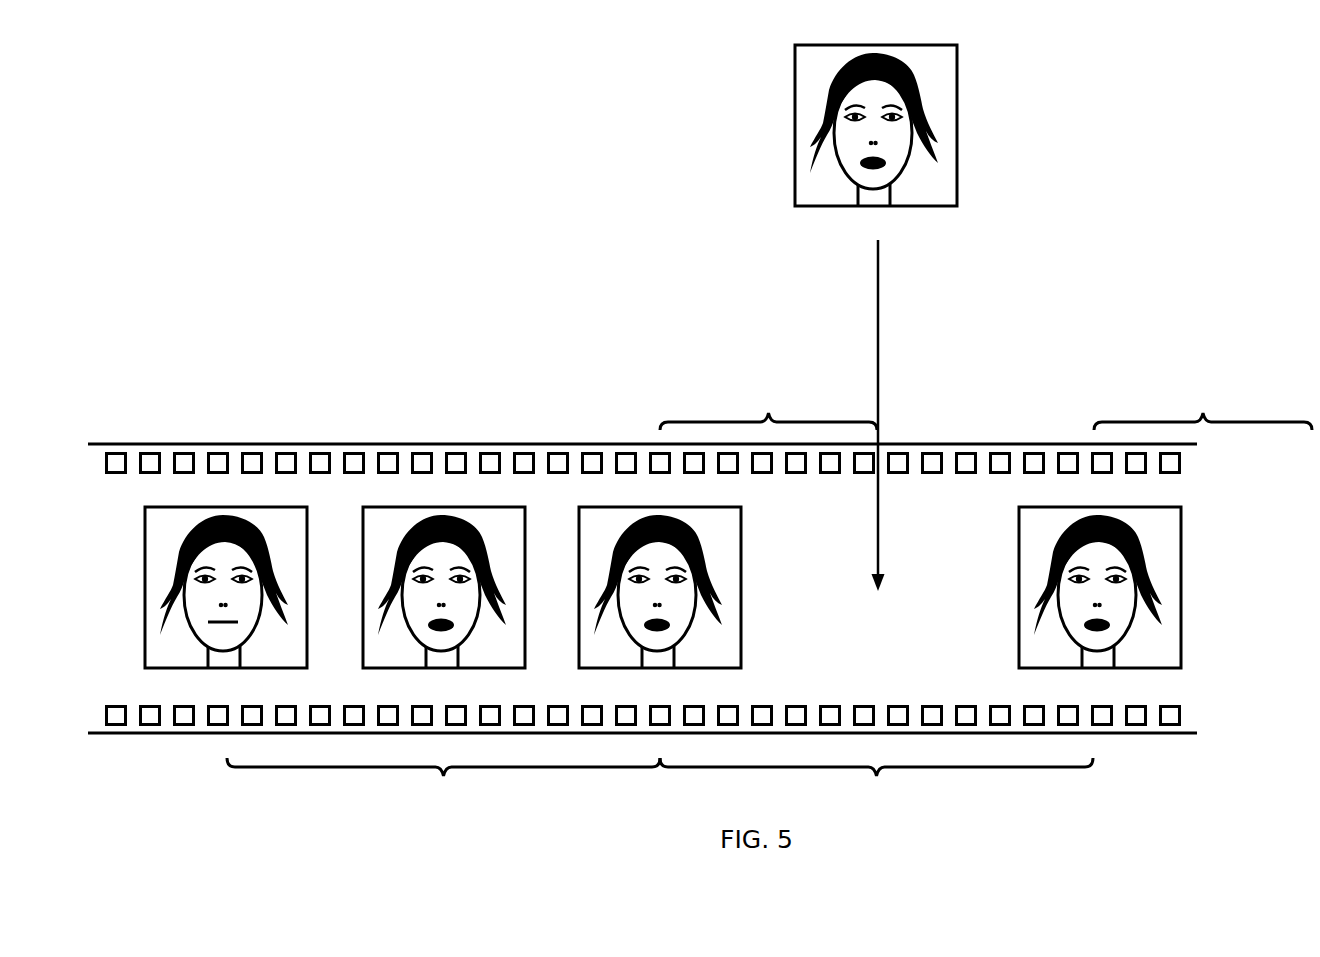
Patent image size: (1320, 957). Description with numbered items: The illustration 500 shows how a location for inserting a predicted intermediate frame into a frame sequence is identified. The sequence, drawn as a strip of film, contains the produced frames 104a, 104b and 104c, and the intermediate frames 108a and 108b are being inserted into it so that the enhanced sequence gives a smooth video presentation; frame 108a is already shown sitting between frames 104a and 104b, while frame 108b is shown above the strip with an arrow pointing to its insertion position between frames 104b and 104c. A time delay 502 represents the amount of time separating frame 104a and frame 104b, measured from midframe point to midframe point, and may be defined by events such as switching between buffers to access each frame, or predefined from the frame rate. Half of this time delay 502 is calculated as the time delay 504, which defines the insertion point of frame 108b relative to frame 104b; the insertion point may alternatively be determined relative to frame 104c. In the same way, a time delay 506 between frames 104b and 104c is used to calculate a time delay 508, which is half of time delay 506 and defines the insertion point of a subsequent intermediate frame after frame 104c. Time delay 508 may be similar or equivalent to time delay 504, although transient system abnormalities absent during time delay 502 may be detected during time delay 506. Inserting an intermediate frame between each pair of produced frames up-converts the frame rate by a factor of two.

The video frame sequence / timeline 500 is at (247, 261).
The time delay 502 is at (443, 782).
The time delay 504 is at (768, 406).
The time delay 506 is at (876, 782).
The time delay 508 is at (1203, 406).
The frame 104a is at (230, 604).
The frame 108a is at (448, 604).
The frame 104b is at (664, 604).
The frame 104c is at (1118, 604).
The frame 108b is at (880, 142).